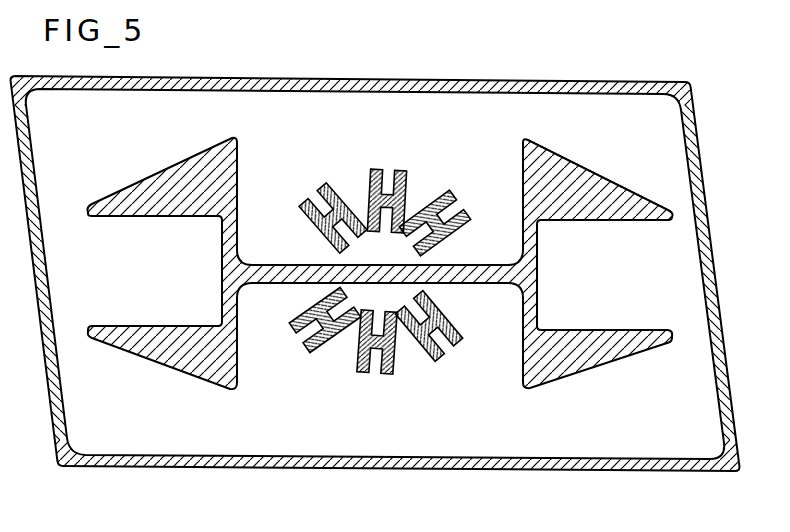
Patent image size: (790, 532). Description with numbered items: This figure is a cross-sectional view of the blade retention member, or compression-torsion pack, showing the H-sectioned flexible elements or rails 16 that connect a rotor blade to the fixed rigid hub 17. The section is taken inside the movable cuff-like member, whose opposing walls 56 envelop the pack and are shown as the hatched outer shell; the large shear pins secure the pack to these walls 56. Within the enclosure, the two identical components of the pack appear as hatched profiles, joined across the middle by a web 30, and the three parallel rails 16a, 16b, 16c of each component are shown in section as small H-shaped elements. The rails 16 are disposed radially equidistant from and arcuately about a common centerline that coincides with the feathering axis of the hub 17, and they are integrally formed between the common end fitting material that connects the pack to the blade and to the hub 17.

The opposing walls 56 is at (441, 83).
The fixed rigid hub 17 is at (166, 159).
The connecting web / bar 30 is at (293, 264).
The flexible elements or rails 16 is at (385, 271).
The rail 16a is at (339, 189).
The rail 16b is at (407, 174).
The rail 16c is at (460, 226).